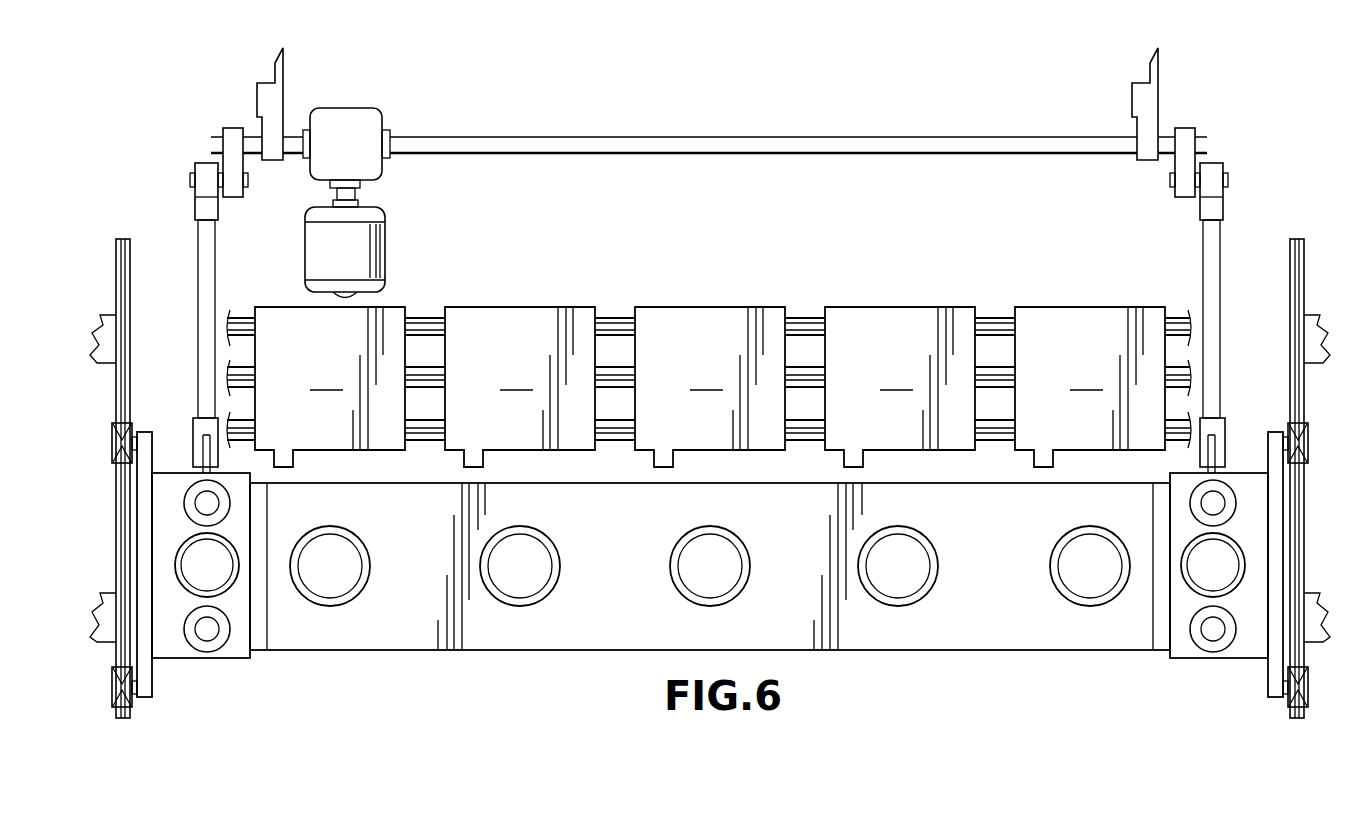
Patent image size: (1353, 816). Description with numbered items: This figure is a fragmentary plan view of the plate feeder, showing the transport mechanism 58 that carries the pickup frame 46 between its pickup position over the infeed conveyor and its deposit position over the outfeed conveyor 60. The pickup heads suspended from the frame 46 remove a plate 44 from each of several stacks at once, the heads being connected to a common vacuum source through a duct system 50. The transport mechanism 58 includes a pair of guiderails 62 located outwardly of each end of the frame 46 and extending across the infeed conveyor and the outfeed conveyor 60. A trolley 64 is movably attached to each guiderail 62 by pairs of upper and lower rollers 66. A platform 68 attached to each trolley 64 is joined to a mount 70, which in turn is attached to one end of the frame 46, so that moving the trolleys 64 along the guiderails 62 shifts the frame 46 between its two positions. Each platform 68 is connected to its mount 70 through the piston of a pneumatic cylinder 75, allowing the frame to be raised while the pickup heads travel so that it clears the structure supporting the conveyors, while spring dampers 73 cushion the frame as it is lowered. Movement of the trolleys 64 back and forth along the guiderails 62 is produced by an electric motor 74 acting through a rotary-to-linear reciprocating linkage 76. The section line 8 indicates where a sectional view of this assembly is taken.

The section line 8- 8 is at (1022, 48).
The plate 44 is at (710, 387).
The pickup frame 46 is at (423, 652).
The duct system 50 is at (372, 566).
The transport mechanism 58 is at (1227, 145).
The outfeed conveyor 60 is at (615, 307).
The guiderails 62 is at (116, 266).
The trolley 64 is at (145, 542).
The rollers 66 is at (112, 443).
The platform 68 is at (260, 510).
The mount 70 is at (177, 655).
The spring dampers 73 is at (193, 492).
The electric motor 74 is at (390, 246).
The pneumatic cylinder 75 is at (233, 590).
The rotary-to-linear reciprocating linkage 76 is at (195, 212).